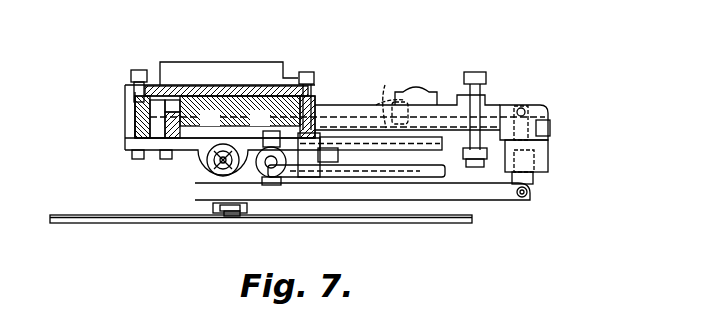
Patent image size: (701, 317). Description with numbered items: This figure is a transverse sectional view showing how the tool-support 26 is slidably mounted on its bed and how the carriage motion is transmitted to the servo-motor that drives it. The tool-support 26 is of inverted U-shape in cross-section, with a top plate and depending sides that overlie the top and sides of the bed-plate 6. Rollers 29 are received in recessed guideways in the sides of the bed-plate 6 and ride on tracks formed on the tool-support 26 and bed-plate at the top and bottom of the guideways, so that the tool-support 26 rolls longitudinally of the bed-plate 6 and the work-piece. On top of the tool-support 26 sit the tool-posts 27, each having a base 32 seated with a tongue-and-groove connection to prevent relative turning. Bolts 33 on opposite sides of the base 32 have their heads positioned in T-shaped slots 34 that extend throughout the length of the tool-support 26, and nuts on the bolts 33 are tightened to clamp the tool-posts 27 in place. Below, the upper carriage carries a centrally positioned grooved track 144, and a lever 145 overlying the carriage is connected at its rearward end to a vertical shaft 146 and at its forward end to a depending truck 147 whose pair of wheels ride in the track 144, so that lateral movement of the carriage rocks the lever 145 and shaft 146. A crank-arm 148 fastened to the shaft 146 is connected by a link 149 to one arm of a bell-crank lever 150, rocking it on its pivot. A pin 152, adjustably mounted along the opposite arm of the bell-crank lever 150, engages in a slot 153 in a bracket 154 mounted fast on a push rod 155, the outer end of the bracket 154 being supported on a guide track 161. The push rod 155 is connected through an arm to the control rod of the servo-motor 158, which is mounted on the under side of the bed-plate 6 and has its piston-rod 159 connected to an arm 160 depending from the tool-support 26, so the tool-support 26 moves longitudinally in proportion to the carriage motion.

The bed-plate 6 is at (198, 120).
The tool-support 26 is at (150, 126).
The tool-post 27 is at (284, 62).
The roller 29 is at (165, 118).
The base 32 is at (236, 70).
The bolt 33 is at (139, 70).
The T-shaped slot 34 is at (134, 92).
The grooved track 144 is at (132, 215).
The lever 145 is at (490, 194).
The vertical shaft 146 is at (548, 151).
The truck 147 is at (232, 218).
The crank-arm 148 is at (546, 128).
The link 149 is at (440, 104).
The bell-crank lever 150 is at (398, 84).
The pin 152 is at (312, 178).
The slot 153 is at (418, 178).
The bracket 154 is at (386, 151).
The push rod 155 is at (272, 186).
The servo-motor 158 is at (216, 170).
The piston-rod 159 is at (213, 208).
The arm 160 is at (170, 151).
The guide track 161 is at (478, 130).